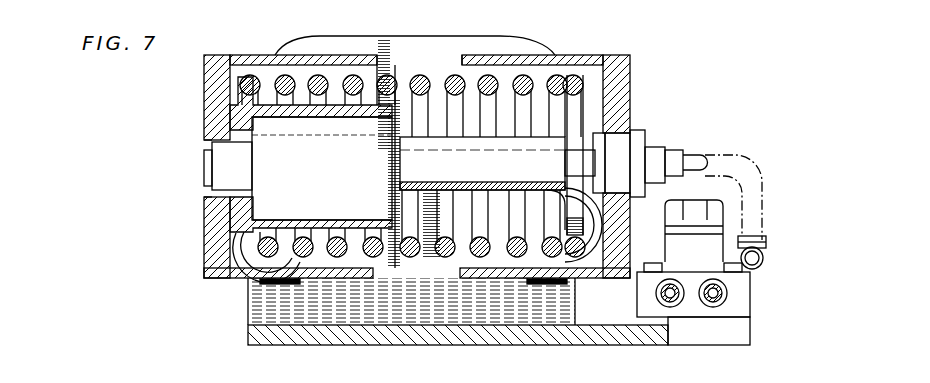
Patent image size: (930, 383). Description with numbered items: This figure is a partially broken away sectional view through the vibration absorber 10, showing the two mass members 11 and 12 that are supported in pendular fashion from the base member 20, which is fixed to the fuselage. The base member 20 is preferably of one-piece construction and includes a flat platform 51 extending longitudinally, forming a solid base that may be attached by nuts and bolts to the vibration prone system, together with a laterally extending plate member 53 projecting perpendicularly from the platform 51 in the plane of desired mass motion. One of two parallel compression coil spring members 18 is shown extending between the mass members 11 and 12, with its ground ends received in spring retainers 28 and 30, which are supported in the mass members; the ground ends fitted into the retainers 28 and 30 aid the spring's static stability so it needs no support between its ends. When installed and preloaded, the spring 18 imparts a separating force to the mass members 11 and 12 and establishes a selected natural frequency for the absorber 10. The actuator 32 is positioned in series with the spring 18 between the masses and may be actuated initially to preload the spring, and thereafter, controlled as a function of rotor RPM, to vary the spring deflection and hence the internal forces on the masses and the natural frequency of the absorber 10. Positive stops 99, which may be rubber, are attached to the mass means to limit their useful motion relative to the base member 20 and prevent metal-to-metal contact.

The vibration absorber 10 is at (704, 85).
The mass member 11 is at (267, 55).
The mass member 12 is at (570, 58).
The spring member 18 is at (428, 78).
The base member 20 is at (565, 330).
The spring retainer 28 is at (240, 83).
The spring retainer 30 is at (583, 80).
The actuator 32 is at (480, 169).
The flat platform 51 is at (398, 336).
The plate member 53 is at (316, 38).
The positive stop 99 is at (270, 287).